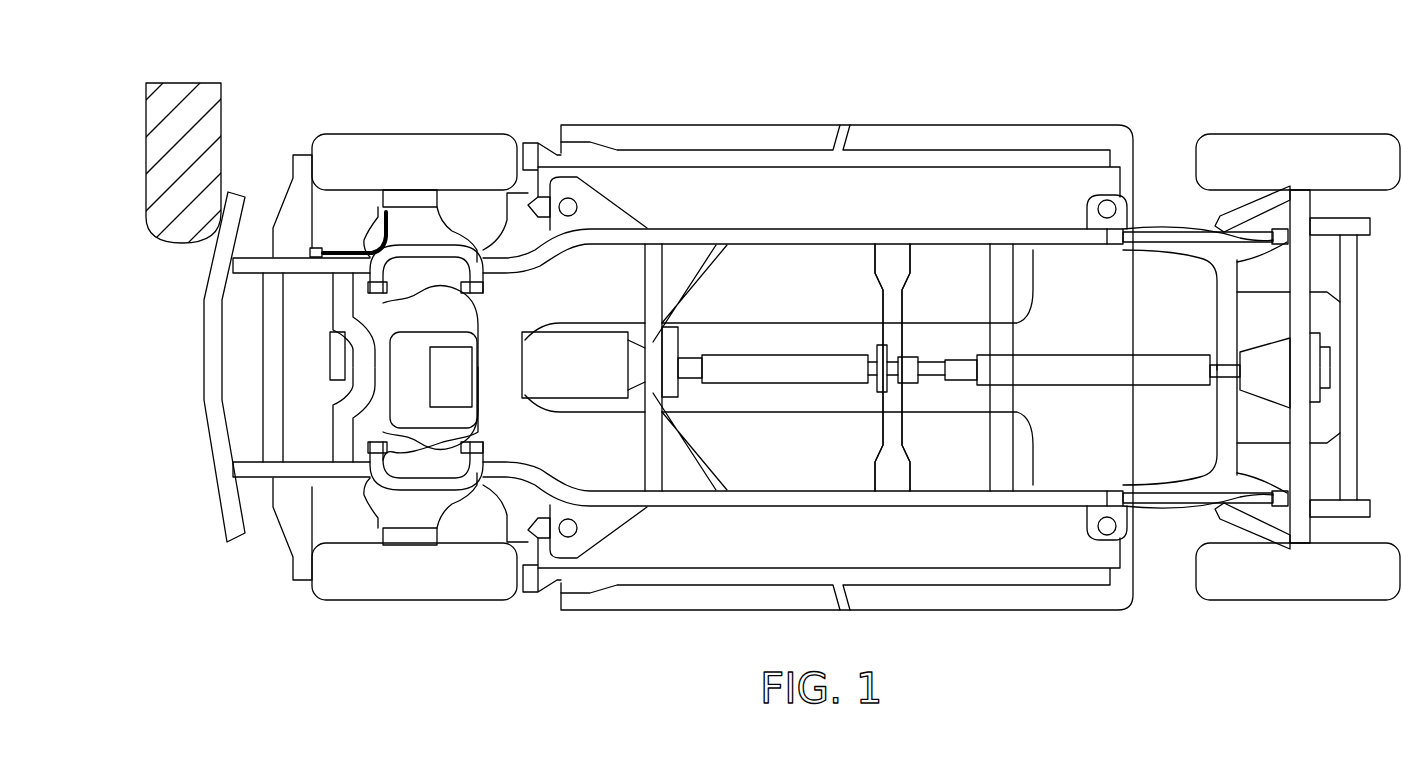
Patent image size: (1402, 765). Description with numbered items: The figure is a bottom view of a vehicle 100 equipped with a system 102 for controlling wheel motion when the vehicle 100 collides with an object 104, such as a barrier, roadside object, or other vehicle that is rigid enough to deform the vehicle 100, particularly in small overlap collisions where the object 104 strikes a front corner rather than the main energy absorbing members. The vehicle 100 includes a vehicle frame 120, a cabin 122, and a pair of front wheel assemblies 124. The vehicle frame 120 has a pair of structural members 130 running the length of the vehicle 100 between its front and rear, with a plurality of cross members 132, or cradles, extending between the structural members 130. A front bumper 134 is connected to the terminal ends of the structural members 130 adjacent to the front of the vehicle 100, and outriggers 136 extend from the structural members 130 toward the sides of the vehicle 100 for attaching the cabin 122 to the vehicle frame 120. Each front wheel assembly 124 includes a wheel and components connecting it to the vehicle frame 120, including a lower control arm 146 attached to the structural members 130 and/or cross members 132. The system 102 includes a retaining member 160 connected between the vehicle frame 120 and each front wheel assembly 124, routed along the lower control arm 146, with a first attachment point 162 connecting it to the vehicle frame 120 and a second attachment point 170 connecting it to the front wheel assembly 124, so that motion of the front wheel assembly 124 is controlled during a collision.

The vehicle 100 is at (1122, 83).
The system 102 is at (260, 115).
The object 104 is at (162, 140).
The vehicle frame 120 is at (908, 237).
The cabin 122 is at (935, 605).
The front wheel assembly 124 is at (445, 128).
The structural member 130 is at (782, 233).
The cross member 132 is at (507, 322).
The front bumper 134 is at (210, 422).
The outrigger 136 is at (597, 212).
The lower control arm 146 is at (440, 220).
The retaining member 160 is at (363, 252).
The first attachment point 162 is at (317, 250).
The second attachment point 170 is at (383, 213).